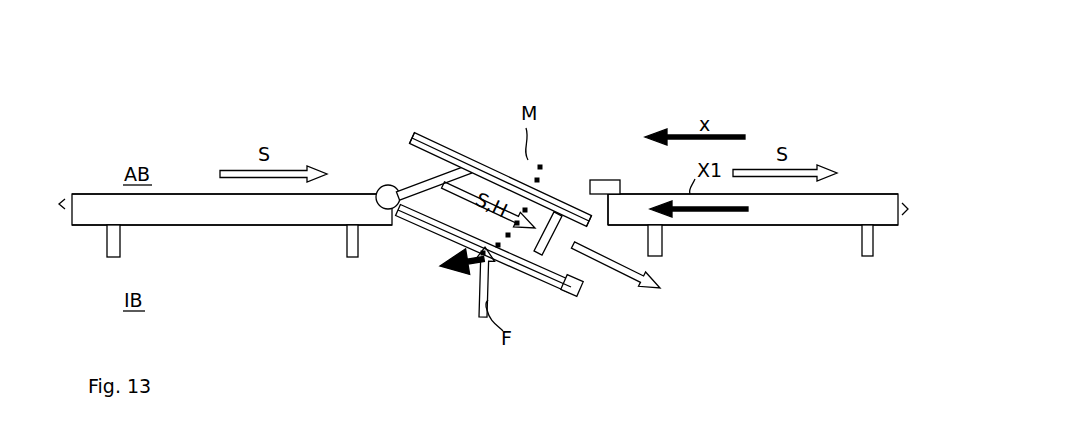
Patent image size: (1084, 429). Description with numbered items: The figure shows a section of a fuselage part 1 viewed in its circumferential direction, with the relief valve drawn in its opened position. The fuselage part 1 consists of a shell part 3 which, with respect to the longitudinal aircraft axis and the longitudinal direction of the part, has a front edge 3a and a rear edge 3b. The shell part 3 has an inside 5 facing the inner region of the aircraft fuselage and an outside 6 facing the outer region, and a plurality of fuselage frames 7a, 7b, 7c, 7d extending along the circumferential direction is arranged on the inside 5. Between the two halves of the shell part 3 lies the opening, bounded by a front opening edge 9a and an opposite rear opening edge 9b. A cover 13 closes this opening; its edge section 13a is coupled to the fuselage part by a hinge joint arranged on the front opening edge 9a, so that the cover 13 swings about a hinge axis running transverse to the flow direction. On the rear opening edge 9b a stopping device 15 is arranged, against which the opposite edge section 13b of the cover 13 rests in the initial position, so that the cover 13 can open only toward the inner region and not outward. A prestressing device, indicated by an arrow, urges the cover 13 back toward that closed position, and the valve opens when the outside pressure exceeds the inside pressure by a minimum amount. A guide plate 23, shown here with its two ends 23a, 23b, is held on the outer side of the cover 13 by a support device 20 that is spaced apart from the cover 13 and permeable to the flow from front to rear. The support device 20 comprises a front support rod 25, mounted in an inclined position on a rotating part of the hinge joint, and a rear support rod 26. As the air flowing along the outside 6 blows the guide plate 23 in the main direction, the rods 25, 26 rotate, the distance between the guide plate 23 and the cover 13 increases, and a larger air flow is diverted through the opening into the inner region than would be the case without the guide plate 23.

The fuselage part 1 is at (637, 115).
The shell part 3 is at (193, 211).
The front edge 3a is at (73, 213).
The rear edge 3b is at (903, 211).
The inside 5 is at (247, 227).
The outside 6 is at (77, 190).
The fuselage frame 7a is at (122, 248).
The fuselage frame 7b is at (347, 243).
The fuselage frame 7c is at (663, 244).
The fuselage frame 7d is at (862, 243).
The front opening edge 9a is at (396, 220).
The rear opening edge 9b is at (606, 210).
The cover 13 is at (462, 274).
The edge section of the cover 13a is at (421, 209).
The edge section of the cover 13b is at (565, 291).
The stopping device 15 is at (606, 180).
The support device 20 is at (384, 138).
The guide plate 23 is at (481, 162).
The first end of coupling rod 23a is at (414, 134).
The second end of coupling rod 23b is at (597, 214).
The front support rod 25 is at (405, 186).
The rear support rod 26 is at (571, 258).